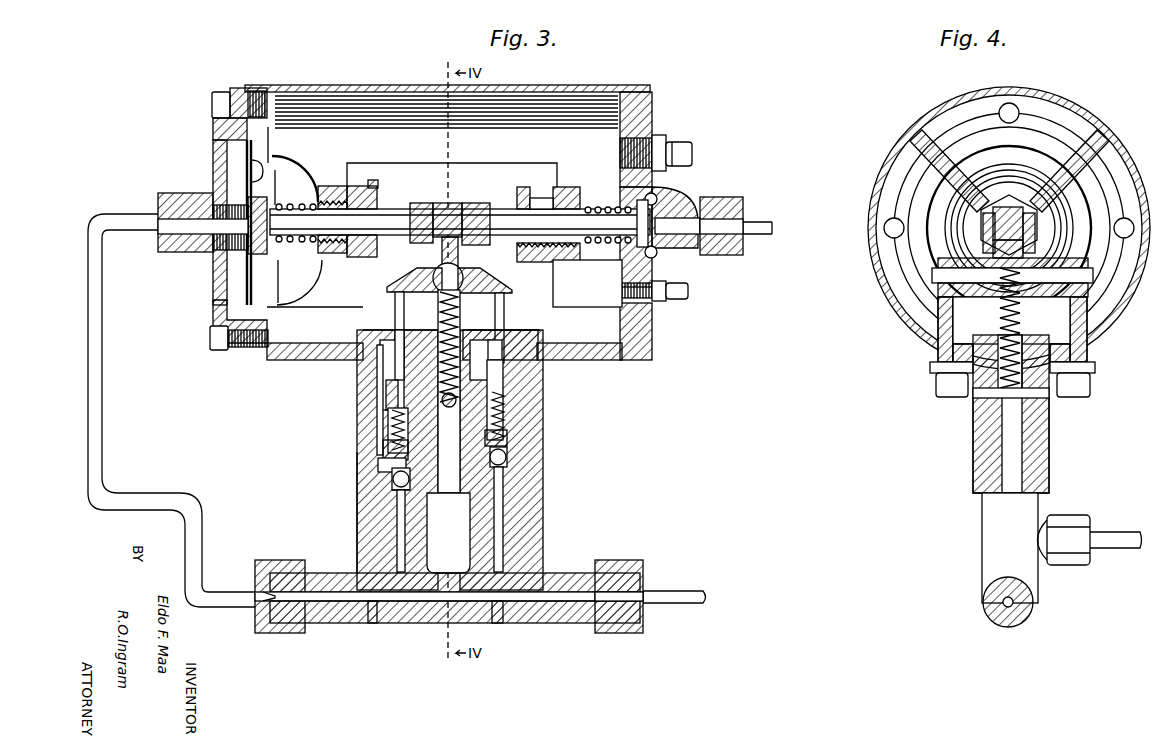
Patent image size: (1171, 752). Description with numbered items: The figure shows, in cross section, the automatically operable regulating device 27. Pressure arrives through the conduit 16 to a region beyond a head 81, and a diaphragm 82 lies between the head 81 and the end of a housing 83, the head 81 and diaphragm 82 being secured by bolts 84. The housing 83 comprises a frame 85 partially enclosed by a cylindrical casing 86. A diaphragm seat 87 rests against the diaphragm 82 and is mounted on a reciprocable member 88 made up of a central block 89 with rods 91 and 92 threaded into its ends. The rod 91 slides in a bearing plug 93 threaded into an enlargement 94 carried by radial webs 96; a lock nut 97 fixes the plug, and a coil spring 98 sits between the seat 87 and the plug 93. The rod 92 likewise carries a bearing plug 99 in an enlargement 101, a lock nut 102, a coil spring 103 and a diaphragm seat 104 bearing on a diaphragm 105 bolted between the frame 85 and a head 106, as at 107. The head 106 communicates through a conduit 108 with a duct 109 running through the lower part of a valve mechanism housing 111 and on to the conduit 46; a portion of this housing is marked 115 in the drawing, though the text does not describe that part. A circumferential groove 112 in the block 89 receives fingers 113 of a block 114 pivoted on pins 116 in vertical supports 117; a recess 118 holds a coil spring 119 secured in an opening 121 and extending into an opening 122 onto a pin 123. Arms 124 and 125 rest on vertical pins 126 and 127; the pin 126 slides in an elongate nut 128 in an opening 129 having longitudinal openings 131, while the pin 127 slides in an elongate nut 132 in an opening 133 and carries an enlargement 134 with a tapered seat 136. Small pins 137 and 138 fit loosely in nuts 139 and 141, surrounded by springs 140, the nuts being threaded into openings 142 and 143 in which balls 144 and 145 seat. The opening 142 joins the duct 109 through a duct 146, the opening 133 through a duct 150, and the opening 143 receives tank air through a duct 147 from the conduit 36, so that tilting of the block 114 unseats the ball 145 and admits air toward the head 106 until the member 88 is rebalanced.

In FIG. 3, the conduit 16 is at (760, 236).
In FIG. 3, the automatically operable regulating device 27 is at (345, 78).
In FIG. 4, the automatically operable regulating device 27 is at (1106, 119).
In FIG. 3, the conduit 36 is at (446, 555).
In FIG. 4, the conduit 36 is at (1115, 532).
In FIG. 3, the conduit 46 is at (680, 592).
In FIG. 3, the head 81 is at (652, 140).
In FIG. 3, the diaphragm 82 is at (660, 200).
In FIG. 3, the housing 83 is at (617, 368).
In FIG. 3, the bolts 84 is at (690, 150).
In FIG. 3, the frame 85 is at (640, 360).
In FIG. 3, the cylindrical casing 86 is at (598, 88).
In FIG. 4, the cylindrical casing 86 is at (872, 278).
In FIG. 3, the diaphragm seat 87 is at (636, 208).
In FIG. 3, the reciprocable member 88 is at (505, 202).
In FIG. 3, the central block 89 is at (420, 203).
In FIG. 4, the central block 89 is at (1012, 205).
In FIG. 3, the rod 91 is at (524, 195).
In FIG. 3, the rod 92 is at (380, 196).
In FIG. 3, the bearing plug 93 is at (530, 185).
In FIG. 3, the enlargement 94 is at (570, 198).
In FIG. 3, the webs 96 is at (323, 270).
In FIG. 4, the webs 96 is at (968, 180).
In FIG. 3, the lock nut 97 is at (560, 262).
In FIG. 3, the coil spring 98 is at (606, 244).
In FIG. 3, the bearing plug 99 is at (316, 195).
In FIG. 3, the enlargement 101 is at (333, 186).
In FIG. 3, the lock nut 102 is at (368, 260).
In FIG. 3, the coil spring 103 is at (298, 255).
In FIG. 3, the diaphragm seat 104 is at (262, 195).
In FIG. 3, the diaphragm 105 is at (248, 175).
In FIG. 3, the head 106 is at (213, 180).
In FIG. 3, the bolt 107 is at (218, 103).
In FIG. 3, the conduit 108 is at (104, 361).
In FIG. 3, the duct 109 is at (415, 600).
In FIG. 4, the duct 109 is at (1010, 607).
In FIG. 4, the valve mechanism housing 111 is at (982, 540).
In FIG. 3, the circumferential groove 112 is at (446, 203).
In FIG. 3, the fingers 113 is at (482, 198).
In FIG. 4, the fingers 113 is at (1035, 215).
In FIG. 3, the block 114 is at (458, 254).
In FIG. 4, the block 114 is at (1022, 300).
In FIG. 3, the valve body 115 is at (530, 540).
In FIG. 4, the pins 116 is at (948, 272).
In FIG. 4, the vertical supports 117 is at (945, 322).
In FIG. 4, the recess 118 is at (1000, 295).
In FIG. 3, the coil spring 119 is at (442, 318).
In FIG. 4, the coil spring 119 is at (1010, 305).
In FIG. 4, the opening 121 is at (1030, 262).
In FIG. 4, the opening 122 is at (1006, 452).
In FIG. 3, the pin 123 is at (400, 416).
In FIG. 4, the pin 123 is at (1042, 393).
In FIG. 3, the arm 124 is at (512, 288).
In FIG. 3, the arm 125 is at (389, 290).
In FIG. 3, the vertical pin 126 is at (505, 316).
In FIG. 3, the vertical pin 127 is at (394, 312).
In FIG. 3, the elongate nut 128 is at (520, 338).
In FIG. 3, the opening 129 is at (510, 402).
In FIG. 3, the longitudinal openings 131 is at (505, 372).
In FIG. 3, the elongate nut 132 is at (380, 330).
In FIG. 3, the opening 133 is at (380, 368).
In FIG. 3, the enlargement 134 is at (386, 400).
In FIG. 3, the tapered seat 136 is at (395, 380).
In FIG. 3, the small elongate pin 137 is at (507, 418).
In FIG. 3, the small elongate pin 138 is at (392, 445).
In FIG. 3, the nut 139 is at (510, 436).
In FIG. 3, the springs 140 is at (377, 410).
In FIG. 3, the nut 141 is at (380, 462).
In FIG. 3, the opening 142 is at (508, 455).
In FIG. 3, the opening 143 is at (393, 478).
In FIG. 3, the ball 144 is at (452, 408).
In FIG. 3, the ball 145 is at (395, 492).
In FIG. 3, the duct 146 is at (505, 548).
In FIG. 3, the duct 147 is at (396, 538).
In FIG. 3, the duct 150 is at (372, 512).